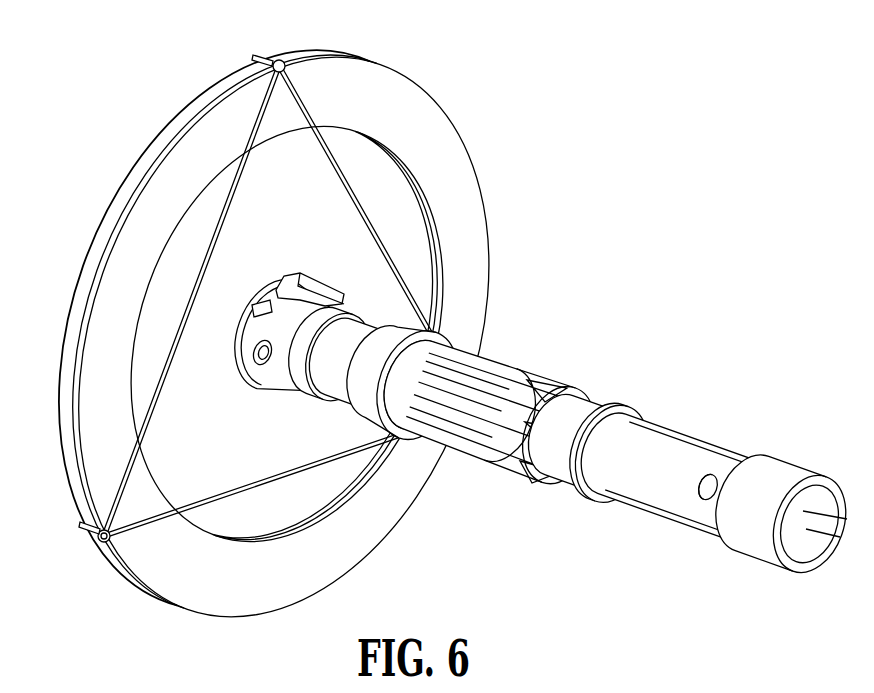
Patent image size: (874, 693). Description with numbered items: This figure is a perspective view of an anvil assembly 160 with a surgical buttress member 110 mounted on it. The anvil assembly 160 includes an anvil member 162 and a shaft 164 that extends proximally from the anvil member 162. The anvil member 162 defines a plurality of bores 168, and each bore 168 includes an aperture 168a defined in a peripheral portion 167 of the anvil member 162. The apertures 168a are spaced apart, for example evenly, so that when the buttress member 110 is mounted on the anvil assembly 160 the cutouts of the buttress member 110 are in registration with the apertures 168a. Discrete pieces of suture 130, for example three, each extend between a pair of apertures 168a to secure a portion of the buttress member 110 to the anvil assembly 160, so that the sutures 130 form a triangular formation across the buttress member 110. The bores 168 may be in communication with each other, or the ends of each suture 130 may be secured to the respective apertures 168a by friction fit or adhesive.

The buttress member 110 is at (210, 130).
The suture 130 is at (255, 473).
The anvil assembly 160 is at (542, 422).
The anvil member 162 is at (163, 141).
The shaft 164 is at (607, 403).
The peripheral portion 167 is at (128, 174).
The bore 168 is at (105, 545).
The aperture 168a is at (283, 60).